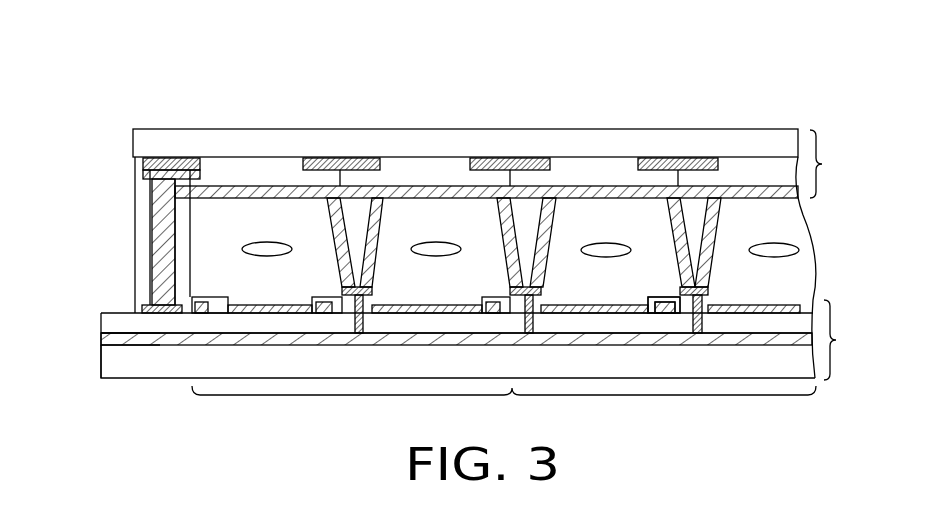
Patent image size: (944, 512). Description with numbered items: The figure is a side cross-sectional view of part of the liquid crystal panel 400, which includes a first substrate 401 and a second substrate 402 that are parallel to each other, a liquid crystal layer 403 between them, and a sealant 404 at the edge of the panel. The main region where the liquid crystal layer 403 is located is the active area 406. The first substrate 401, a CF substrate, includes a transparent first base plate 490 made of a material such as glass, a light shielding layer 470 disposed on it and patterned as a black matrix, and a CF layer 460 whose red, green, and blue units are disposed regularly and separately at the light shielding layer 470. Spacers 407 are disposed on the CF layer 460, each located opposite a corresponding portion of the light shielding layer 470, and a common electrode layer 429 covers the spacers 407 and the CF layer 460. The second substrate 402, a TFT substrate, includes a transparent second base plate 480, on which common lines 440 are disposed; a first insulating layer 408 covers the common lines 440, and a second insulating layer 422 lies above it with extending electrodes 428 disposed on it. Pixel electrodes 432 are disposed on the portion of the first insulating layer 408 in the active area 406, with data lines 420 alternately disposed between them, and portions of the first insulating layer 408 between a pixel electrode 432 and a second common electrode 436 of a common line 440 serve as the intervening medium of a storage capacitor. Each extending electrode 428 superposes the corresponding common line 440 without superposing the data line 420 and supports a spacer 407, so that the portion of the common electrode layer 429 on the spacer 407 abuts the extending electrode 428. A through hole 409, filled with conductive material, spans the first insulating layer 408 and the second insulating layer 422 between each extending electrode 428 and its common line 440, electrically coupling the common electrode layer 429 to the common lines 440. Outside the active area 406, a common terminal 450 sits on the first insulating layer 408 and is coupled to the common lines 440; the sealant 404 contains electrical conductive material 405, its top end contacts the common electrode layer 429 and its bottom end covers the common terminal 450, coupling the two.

The liquid crystal panel 400 is at (474, 57).
The first substrate 401 is at (841, 164).
The second substrate 402 is at (490, 268).
The liquid crystal layer 403 is at (785, 245).
The sealant 404 is at (136, 270).
The electrical conductive material 405 is at (163, 250).
The active area 406 is at (504, 409).
The spacer 407 is at (693, 215).
The first insulating layer 408 is at (127, 323).
The through hole 409 is at (712, 305).
The data line 420 is at (670, 305).
The second insulating layer 422 is at (658, 305).
The extending electrode 428 is at (373, 292).
The common electrode layer 429 is at (228, 187).
The pixel electrode 432 is at (783, 312).
The second common electrode 436 is at (122, 409).
The common line 440 is at (135, 340).
The common terminal 450 is at (165, 313).
The CF layer 460 is at (190, 172).
The light shielding layer 470 is at (152, 158).
The second base plate 480 is at (112, 358).
The first base plate 490 is at (777, 145).